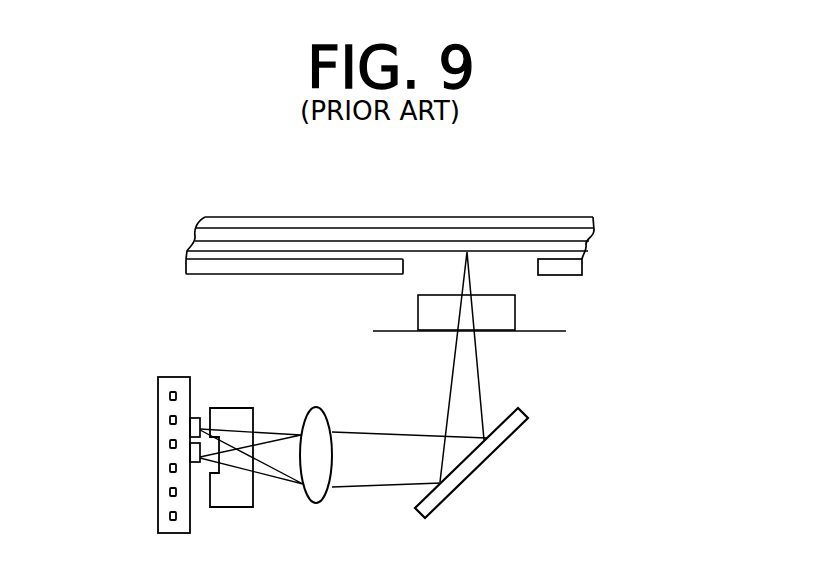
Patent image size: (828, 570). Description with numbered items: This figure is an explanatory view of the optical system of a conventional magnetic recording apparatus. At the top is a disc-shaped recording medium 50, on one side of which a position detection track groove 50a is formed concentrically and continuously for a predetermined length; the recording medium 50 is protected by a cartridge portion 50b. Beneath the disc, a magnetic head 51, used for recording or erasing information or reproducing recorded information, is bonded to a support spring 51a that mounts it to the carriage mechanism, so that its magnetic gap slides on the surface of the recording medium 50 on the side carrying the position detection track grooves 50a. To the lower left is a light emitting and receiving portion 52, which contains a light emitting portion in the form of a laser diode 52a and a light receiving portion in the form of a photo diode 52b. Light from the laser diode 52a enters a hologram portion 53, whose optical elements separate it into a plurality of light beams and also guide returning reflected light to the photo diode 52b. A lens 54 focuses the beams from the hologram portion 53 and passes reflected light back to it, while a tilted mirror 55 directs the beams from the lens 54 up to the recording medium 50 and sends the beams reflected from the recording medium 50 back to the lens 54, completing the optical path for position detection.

The recording medium 50 is at (577, 242).
The position detection track groove 50a is at (520, 252).
The cartridge portion 50b is at (206, 218).
The magnetic head 51 is at (418, 313).
The support spring 51a is at (549, 332).
The light emitting and receiving portion 52 is at (177, 379).
The laser diode 52a is at (199, 463).
The photo diode 52b is at (198, 418).
The hologram portion 53 is at (240, 408).
The lens 54 is at (323, 412).
The mirror 55 is at (528, 415).